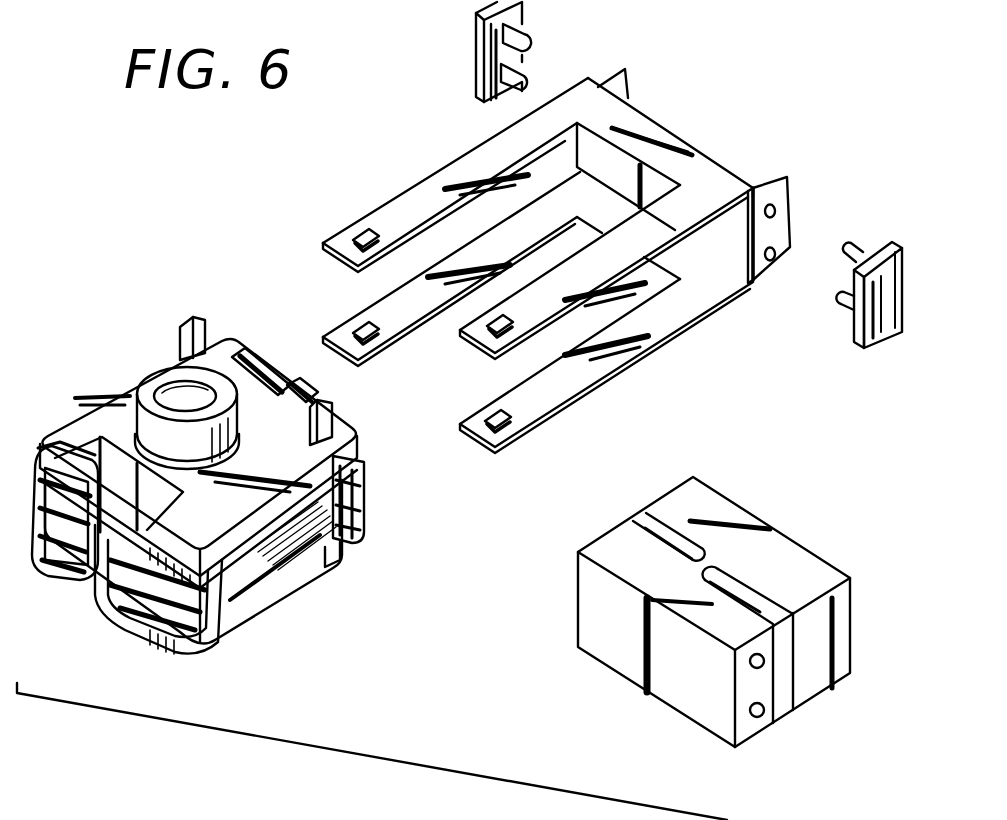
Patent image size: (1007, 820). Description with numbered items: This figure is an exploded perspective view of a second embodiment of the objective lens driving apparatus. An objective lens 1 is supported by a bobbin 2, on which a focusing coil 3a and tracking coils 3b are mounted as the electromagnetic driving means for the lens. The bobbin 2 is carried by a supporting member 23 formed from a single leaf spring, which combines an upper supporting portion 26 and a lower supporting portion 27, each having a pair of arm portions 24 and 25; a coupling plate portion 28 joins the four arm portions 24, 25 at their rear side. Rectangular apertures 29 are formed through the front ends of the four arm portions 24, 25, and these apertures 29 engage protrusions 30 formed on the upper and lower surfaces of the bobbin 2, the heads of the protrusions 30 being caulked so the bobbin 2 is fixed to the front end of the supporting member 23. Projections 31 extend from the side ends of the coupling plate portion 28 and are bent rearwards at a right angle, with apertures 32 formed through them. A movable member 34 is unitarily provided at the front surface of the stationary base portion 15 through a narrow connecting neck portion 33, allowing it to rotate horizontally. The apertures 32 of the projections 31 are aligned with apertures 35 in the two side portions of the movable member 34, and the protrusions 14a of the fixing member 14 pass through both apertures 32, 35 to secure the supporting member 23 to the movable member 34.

The objective lens 1 is at (175, 378).
The bobbin 2 is at (80, 425).
The focusing coil 3a is at (282, 567).
The tracking coils 3b is at (362, 513).
The fixing member 14 is at (478, 18).
The protrusions 14a is at (532, 38).
The stationary base portion 15 is at (790, 535).
The supporting member 23 is at (416, 387).
The arm portions 24 is at (431, 185).
The arm portions 25 is at (658, 236).
The upper supporting portion 26 is at (468, 132).
The lower supporting portion 27 is at (499, 449).
The coupling plate portion 28 is at (654, 165).
The rectangular apertures 29 is at (365, 228).
The protrusions 30 is at (190, 318).
The projections 31 is at (623, 84).
The apertures 32 is at (777, 208).
The connecting neck portion 33 is at (682, 556).
The movable member 34 is at (612, 643).
The apertures 35 is at (755, 664).